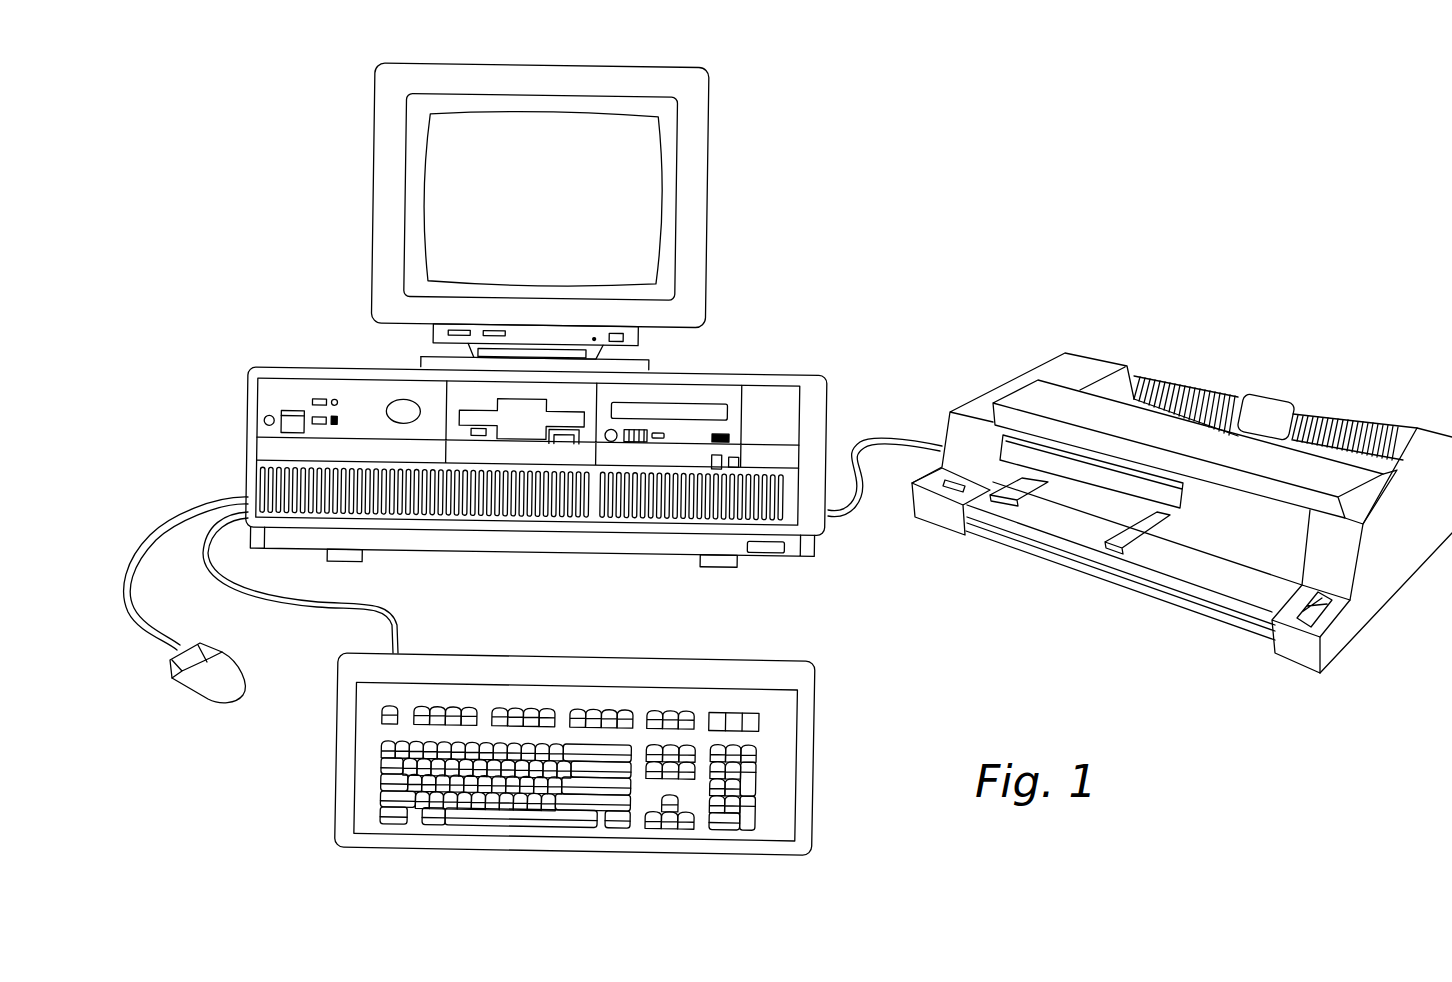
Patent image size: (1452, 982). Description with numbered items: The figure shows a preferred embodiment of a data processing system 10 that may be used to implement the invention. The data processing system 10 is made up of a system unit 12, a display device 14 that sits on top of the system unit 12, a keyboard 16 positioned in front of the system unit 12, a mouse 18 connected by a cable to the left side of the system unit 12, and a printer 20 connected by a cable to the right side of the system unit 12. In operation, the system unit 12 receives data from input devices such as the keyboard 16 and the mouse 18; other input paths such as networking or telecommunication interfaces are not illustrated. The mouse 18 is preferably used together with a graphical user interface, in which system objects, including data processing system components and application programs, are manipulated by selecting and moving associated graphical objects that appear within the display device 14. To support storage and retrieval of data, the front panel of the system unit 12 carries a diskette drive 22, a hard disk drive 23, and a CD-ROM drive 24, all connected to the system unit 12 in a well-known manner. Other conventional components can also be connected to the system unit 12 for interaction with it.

The data processing system 10 is at (911, 121).
The system unit 12 is at (541, 466).
The display device 14 is at (737, 217).
The keyboard 16 is at (662, 642).
The mouse 18 is at (200, 688).
The printer 20 is at (962, 357).
The diskette drive 22 is at (518, 425).
The hard disk drive 23 is at (677, 457).
The CD-ROM drive 24 is at (692, 402).